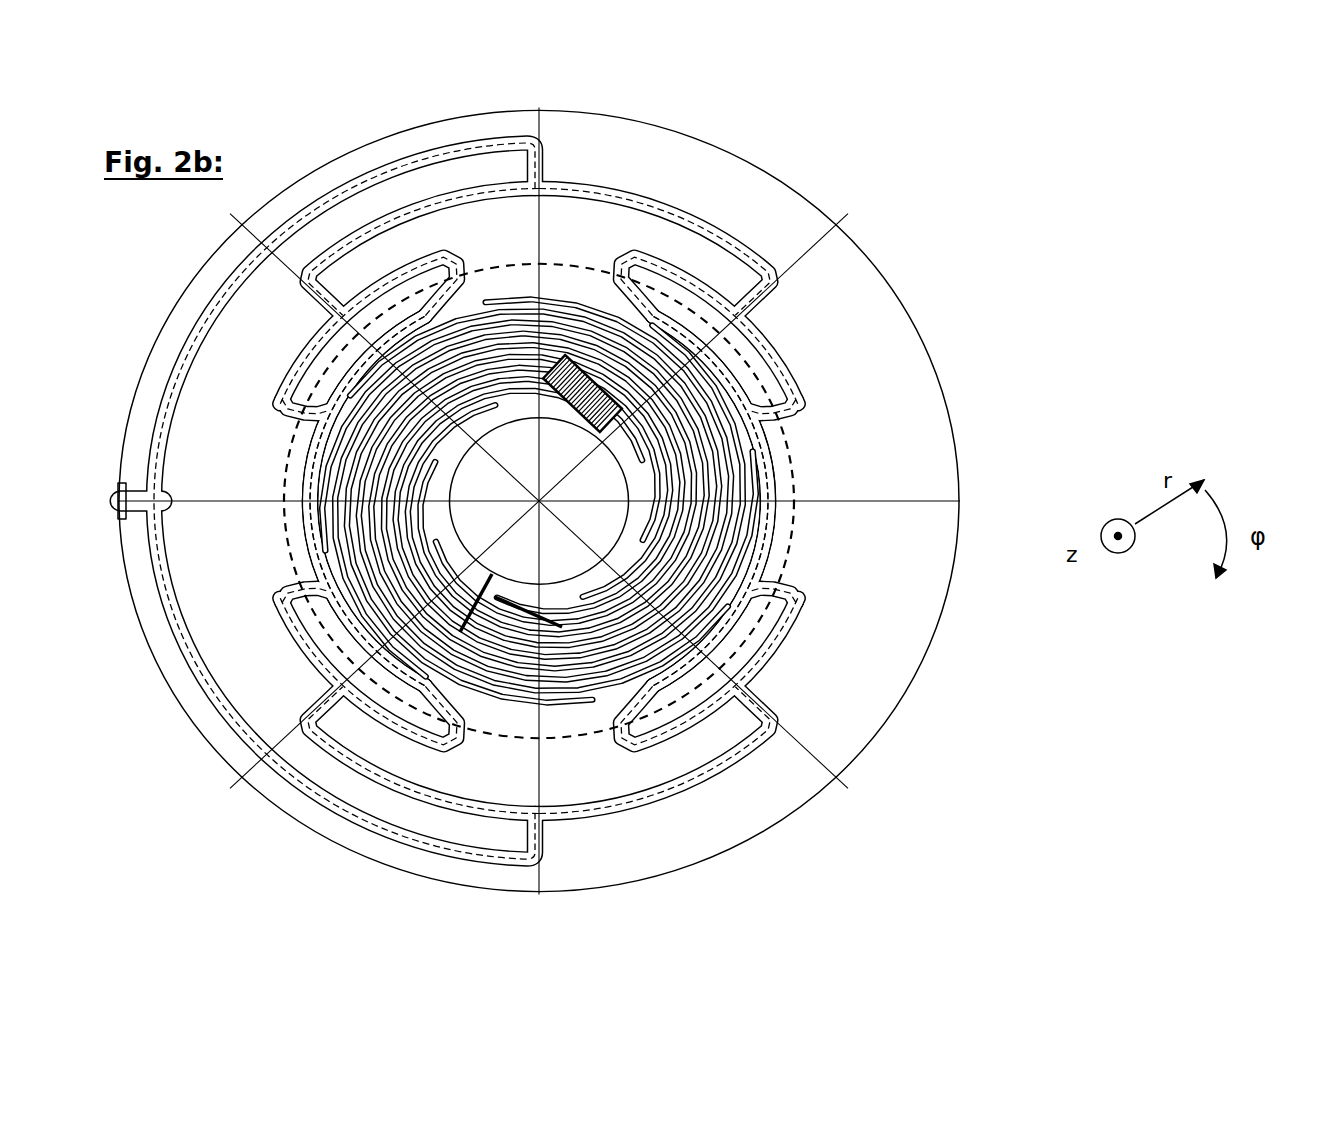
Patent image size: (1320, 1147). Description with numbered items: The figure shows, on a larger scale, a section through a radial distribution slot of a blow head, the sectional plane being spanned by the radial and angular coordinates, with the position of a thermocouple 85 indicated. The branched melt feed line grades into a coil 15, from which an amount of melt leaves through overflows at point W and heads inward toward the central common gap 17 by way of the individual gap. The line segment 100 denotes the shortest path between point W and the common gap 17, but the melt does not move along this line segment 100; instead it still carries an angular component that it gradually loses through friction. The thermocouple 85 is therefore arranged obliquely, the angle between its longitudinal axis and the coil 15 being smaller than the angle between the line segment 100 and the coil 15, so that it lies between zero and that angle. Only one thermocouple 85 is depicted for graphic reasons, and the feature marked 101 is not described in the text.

The coil 15 is at (588, 706).
The common gap 17 is at (616, 472).
The thermocouple 85 is at (614, 390).
The line segment 100 is at (562, 627).
The sector boundary line 101 is at (548, 238).
The point W is at (460, 632).